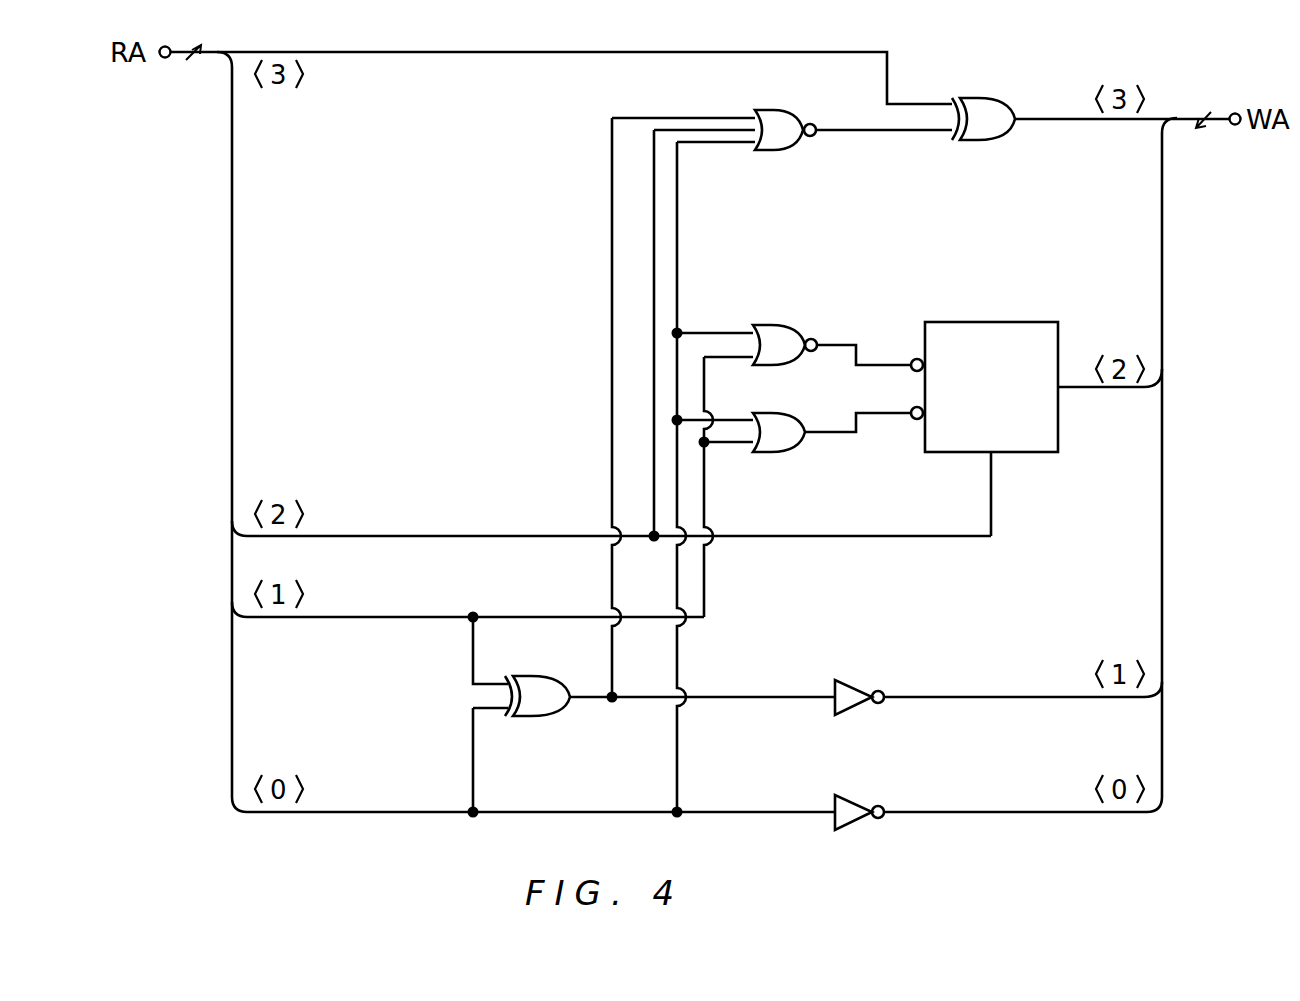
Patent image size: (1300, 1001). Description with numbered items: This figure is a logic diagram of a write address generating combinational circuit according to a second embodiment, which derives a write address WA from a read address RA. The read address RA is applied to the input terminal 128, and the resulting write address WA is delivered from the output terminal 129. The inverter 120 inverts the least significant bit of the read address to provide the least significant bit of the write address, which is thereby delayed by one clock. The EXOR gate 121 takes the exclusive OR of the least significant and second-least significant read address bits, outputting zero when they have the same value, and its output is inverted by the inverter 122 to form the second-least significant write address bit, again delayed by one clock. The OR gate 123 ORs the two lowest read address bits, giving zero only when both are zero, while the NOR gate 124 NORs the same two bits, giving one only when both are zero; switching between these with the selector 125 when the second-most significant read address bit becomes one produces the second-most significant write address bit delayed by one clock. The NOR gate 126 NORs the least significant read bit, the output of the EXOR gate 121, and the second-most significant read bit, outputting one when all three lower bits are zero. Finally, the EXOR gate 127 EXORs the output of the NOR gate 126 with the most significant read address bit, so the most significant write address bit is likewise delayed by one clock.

The inverter 120 is at (851, 807).
The EXOR gate 121 is at (549, 680).
The inverter 122 is at (851, 692).
The OR gate 123 is at (789, 448).
The NOR gate 124 is at (776, 331).
The selector 125 is at (983, 331).
The NOR gate 126 is at (793, 126).
The EXOR gate 127 is at (987, 108).
The input terminal 128 is at (168, 57).
The output terminal 129 is at (1238, 125).